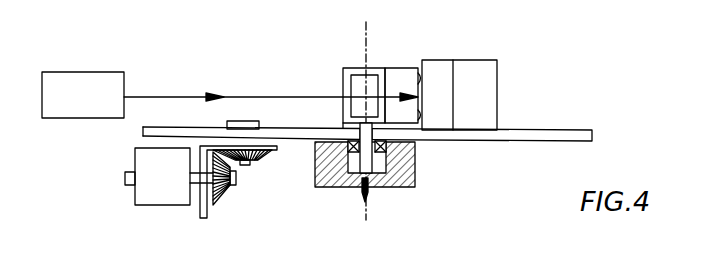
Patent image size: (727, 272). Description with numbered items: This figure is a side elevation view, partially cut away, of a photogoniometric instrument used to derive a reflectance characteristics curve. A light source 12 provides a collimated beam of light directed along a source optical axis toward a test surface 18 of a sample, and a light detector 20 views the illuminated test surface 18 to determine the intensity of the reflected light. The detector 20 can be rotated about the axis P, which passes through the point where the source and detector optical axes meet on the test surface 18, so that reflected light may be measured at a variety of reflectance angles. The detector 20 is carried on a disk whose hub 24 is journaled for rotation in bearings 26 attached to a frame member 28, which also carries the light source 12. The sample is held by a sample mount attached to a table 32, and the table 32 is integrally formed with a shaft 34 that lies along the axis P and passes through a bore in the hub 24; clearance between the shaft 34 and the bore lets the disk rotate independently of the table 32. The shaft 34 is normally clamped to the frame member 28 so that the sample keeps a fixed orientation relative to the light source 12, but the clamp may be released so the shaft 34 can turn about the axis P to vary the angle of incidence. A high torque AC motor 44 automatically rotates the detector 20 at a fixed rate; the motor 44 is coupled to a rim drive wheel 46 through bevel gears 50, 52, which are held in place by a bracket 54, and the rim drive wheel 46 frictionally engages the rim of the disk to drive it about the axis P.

The light source 12 is at (93, 87).
The rim drive wheel 46 is at (253, 122).
The table 32 is at (338, 127).
The axis P is at (367, 110).
The test surface 18 is at (372, 80).
The light detector 20 is at (482, 90).
The bracket 54 is at (205, 219).
The high torque AC motor 44 is at (150, 202).
The bevel gear 52 is at (270, 152).
The bevel gear 50 is at (231, 186).
The frame member 28 is at (401, 187).
The bearings 26 is at (416, 150).
The hub 24 is at (388, 160).
The shaft 34 is at (350, 186).